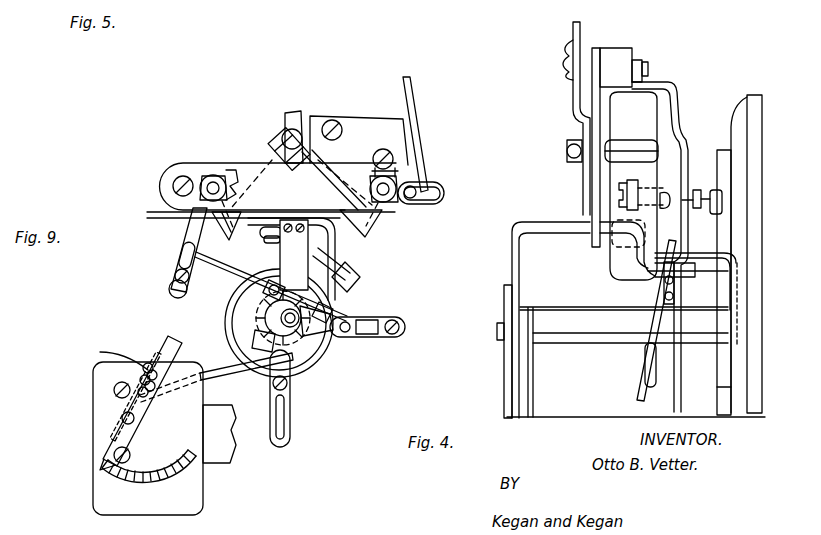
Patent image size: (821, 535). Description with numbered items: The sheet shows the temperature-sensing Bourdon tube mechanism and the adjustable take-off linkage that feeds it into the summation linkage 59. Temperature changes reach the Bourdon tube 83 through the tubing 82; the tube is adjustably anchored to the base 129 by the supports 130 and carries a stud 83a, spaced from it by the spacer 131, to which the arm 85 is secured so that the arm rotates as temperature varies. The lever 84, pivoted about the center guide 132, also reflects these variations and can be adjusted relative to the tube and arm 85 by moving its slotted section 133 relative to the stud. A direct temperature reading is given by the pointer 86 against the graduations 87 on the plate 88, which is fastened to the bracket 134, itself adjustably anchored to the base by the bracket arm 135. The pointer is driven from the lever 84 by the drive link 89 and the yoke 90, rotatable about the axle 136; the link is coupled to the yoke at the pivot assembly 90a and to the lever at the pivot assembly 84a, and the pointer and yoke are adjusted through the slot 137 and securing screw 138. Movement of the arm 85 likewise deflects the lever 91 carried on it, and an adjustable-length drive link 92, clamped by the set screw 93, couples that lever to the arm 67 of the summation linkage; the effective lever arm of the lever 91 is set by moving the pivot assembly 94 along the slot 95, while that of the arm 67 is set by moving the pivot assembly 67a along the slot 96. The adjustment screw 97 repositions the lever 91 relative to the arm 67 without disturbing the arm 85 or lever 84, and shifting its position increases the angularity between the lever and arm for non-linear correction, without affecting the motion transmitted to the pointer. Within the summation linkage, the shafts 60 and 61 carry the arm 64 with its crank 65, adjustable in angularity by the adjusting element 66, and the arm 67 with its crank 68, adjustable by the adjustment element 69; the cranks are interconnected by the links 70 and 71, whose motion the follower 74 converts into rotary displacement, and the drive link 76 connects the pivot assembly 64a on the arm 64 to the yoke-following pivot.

In FIG. 9, the summation linkage 59 is at (172, 165).
In FIG. 9, the shaft 60 is at (396, 180).
In FIG. 9, the shaft 61 is at (204, 180).
In FIG. 9, the arm 64 is at (440, 192).
In FIG. 9, the pivot assembly 64a is at (436, 204).
In FIG. 9, the crank 65 is at (380, 228).
In FIG. 9, the adjusting element 66 is at (374, 173).
In FIG. 9, the arm 67 is at (174, 286).
In FIG. 9, the pivot assembly 67a is at (181, 258).
In FIG. 9, the crank 68 is at (224, 236).
In FIG. 9, the adjustment element 69 is at (228, 170).
In FIG. 9, the link 70 is at (330, 121).
In FIG. 9, the link 71 is at (272, 160).
In FIG. 9, the follower 74 is at (285, 120).
In FIG. 9, the drive link 76 is at (404, 80).
In FIG. 9, the tubing 82 is at (150, 212).
In FIG. 9, the Bourdon tube 83 is at (231, 318).
In FIG. 4, the Bourdon tube 83 is at (612, 258).
In FIG. 4, the stud 83a is at (638, 60).
In FIG. 9, the lever 84 is at (291, 420).
In FIG. 4, the lever 84 is at (675, 88).
In FIG. 4, the pivot assembly 84a is at (676, 290).
In FIG. 9, the arm 85 is at (281, 244).
In FIG. 4, the arm 85 is at (596, 48).
In FIG. 9, the pointer 86 is at (108, 450).
In FIG. 4, the pointer 86 is at (504, 367).
In FIG. 9, the graduations 87 is at (102, 474).
In FIG. 9, the plate 88 is at (195, 497).
In FIG. 4, the plate 88 is at (520, 417).
In FIG. 9, the drive link 89 is at (232, 370).
In FIG. 4, the drive link 89 is at (658, 320).
In FIG. 9, the yoke 90 is at (167, 355).
In FIG. 4, the yoke 90 is at (539, 225).
In FIG. 9, the pivot assembly 90a is at (125, 414).
In FIG. 4, the pivot assembly 90a is at (648, 368).
In FIG. 9, the lever 91 is at (345, 318).
In FIG. 4, the lever 91 is at (573, 95).
In FIG. 9, the adjustable-length drive link 92 is at (272, 279).
In FIG. 9, the set screw 93 is at (265, 291).
In FIG. 9, the pivot assembly 94 is at (370, 320).
In FIG. 4, the pivot assembly 94 is at (564, 54).
In FIG. 9, the slot 95 is at (402, 328).
In FIG. 9, the slot 96 is at (193, 222).
In FIG. 9, the adjustment screw 97 is at (320, 340).
In FIG. 4, the adjustment screw 97 is at (565, 152).
In FIG. 4, the base 129 is at (736, 113).
In FIG. 4, the support 130 is at (655, 186).
In FIG. 4, the spacer 131 is at (612, 48).
In FIG. 4, the center guide 132 is at (688, 208).
In FIG. 9, the slotted section 133 is at (324, 238).
In FIG. 4, the slotted section 133 is at (648, 62).
In FIG. 4, the bracket 134 is at (552, 315).
In FIG. 9, the bracket arm 135 is at (222, 456).
In FIG. 4, the bracket arm 135 is at (724, 412).
In FIG. 4, the axle 136 is at (615, 345).
In FIG. 9, the slot 137 is at (138, 375).
In FIG. 9, the securing screw 138 is at (146, 368).